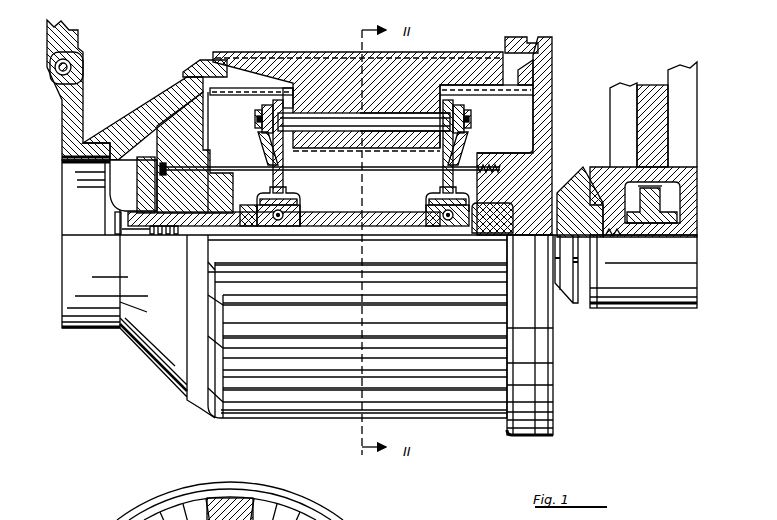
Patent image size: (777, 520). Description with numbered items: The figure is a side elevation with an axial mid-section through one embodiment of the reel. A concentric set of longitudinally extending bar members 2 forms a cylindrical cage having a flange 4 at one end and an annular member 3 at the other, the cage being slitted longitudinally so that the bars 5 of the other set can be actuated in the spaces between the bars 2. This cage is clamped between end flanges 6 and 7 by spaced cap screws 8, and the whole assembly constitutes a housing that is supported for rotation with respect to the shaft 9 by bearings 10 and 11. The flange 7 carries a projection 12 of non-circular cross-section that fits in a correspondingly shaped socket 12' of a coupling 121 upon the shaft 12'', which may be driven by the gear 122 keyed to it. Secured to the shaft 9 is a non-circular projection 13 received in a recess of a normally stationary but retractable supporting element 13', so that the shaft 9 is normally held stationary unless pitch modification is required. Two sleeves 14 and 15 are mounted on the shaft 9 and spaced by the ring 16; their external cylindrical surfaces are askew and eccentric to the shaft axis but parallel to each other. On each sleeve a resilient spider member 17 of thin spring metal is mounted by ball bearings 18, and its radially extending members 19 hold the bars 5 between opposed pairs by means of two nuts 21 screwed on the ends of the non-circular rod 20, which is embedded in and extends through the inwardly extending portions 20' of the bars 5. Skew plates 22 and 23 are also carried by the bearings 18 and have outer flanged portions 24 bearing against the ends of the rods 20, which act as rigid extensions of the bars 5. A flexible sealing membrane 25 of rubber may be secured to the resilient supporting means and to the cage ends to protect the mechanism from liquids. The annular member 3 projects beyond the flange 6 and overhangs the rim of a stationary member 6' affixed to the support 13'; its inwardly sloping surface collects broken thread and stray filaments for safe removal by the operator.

The bar members 2 is at (212, 60).
The annular member 3 is at (196, 385).
The flange 4 is at (528, 37).
The bars 5 is at (268, 54).
The flange 6 is at (195, 139).
The stationary member 6' is at (143, 145).
The flange 7 is at (547, 62).
The cap screws 8 is at (230, 172).
The shaft 9 is at (196, 235).
The bearing 10 is at (245, 226).
The bearing 11 is at (483, 233).
The projection 12 is at (530, 335).
The socket 12' is at (567, 266).
The shaft 12'' is at (664, 185).
The non-circular projection 13 is at (187, 223).
The supporting element 13' is at (84, 174).
The sleeve 14 is at (267, 226).
The sleeve 15 is at (455, 226).
The ring 16 is at (345, 227).
The resilient spider member 17 is at (287, 152).
The ball bearings 18 is at (300, 222).
The radially extending members 19 is at (450, 97).
The non-circular rod 20 is at (364, 109).
The inwardly extending portions 20' is at (405, 155).
The nuts 21 is at (257, 110).
The skew plate 22 is at (258, 147).
The skew plate 23 is at (470, 150).
The outer flanged portions 24 is at (262, 115).
The flexible sealing membrane 25 is at (270, 90).
The coupling 121 is at (563, 192).
The gear 122 is at (659, 203).